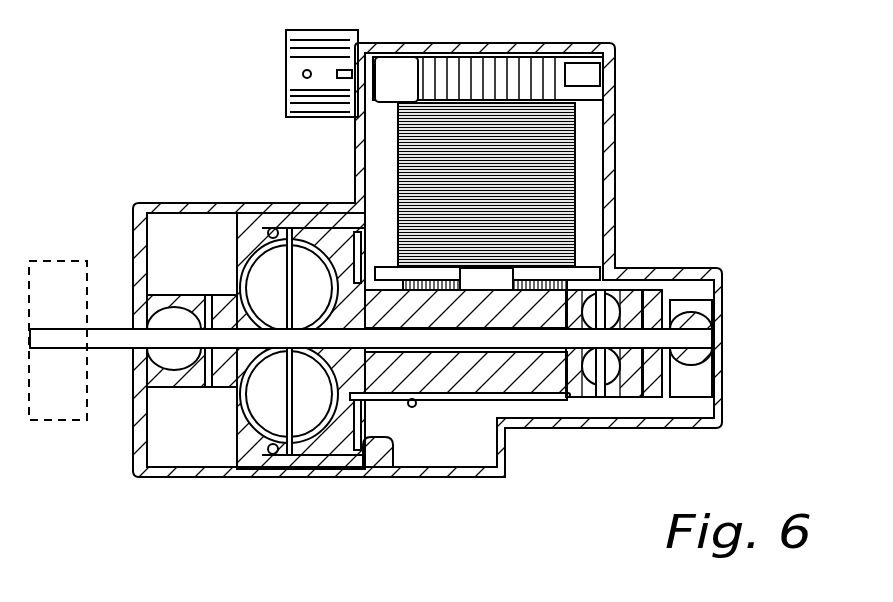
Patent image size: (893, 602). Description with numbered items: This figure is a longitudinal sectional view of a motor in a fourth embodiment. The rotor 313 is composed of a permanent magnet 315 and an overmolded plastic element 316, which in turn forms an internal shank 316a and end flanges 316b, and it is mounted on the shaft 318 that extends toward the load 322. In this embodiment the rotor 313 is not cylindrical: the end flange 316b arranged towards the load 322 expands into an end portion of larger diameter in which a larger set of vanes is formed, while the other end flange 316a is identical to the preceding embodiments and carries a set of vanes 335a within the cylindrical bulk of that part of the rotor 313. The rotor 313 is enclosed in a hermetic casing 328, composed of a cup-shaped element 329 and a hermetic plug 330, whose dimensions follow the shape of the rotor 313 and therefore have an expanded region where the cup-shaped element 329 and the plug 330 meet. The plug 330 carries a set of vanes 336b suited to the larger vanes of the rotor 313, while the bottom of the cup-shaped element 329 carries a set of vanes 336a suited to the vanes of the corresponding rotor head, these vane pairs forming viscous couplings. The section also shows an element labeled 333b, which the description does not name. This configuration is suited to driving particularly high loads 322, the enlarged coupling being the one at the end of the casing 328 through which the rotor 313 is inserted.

The rotor 313 is at (578, 293).
The permanent magnet 315 is at (515, 380).
The overmolded plastic element 316 is at (396, 404).
The internal shank 316a is at (481, 402).
The end flange 316b is at (427, 406).
The shaft 318 is at (116, 346).
The load 322 is at (52, 263).
The hermetic casing 328 is at (330, 448).
The cup-shaped element 329 is at (378, 470).
The hermetic plug 330 is at (223, 452).
The bearing retainer 333b is at (315, 285).
The set of vanes 335a is at (630, 298).
The set of vanes 336a is at (641, 395).
The set of vanes 336b is at (262, 270).